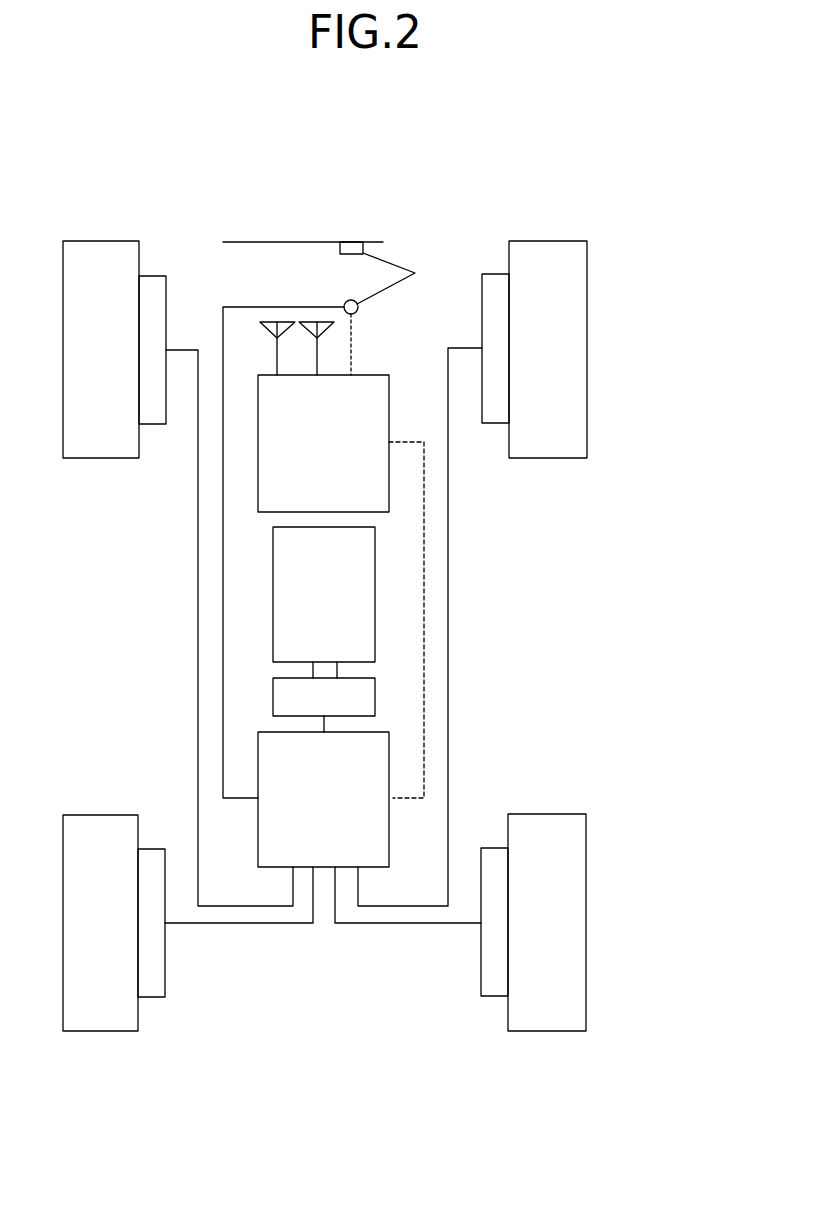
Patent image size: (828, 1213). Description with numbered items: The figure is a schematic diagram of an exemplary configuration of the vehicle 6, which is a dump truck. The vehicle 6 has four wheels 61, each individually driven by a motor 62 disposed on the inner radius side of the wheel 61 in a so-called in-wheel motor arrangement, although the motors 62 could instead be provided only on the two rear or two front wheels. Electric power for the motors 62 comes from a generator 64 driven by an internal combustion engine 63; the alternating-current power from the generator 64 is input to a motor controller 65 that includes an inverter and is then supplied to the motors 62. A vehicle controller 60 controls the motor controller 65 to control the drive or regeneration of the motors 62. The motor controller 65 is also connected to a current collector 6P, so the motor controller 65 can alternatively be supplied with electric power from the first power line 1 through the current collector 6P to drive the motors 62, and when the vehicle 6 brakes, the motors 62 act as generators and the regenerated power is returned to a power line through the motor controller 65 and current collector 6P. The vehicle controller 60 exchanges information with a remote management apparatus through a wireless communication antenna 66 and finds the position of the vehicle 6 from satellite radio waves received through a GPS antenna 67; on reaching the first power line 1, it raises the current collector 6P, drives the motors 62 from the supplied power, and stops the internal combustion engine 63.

The first power line 1 is at (245, 241).
The vehicle 6 is at (647, 150).
The current collector 6P is at (397, 264).
The vehicle controller 60 is at (373, 373).
The wheel 61 is at (100, 240).
The motor 62 is at (154, 275).
The internal combustion engine 63 is at (375, 590).
The generator 64 is at (375, 694).
The motor controller 65 is at (389, 838).
The wireless communication antenna 66 is at (268, 320).
The GPS antenna 67 is at (322, 320).